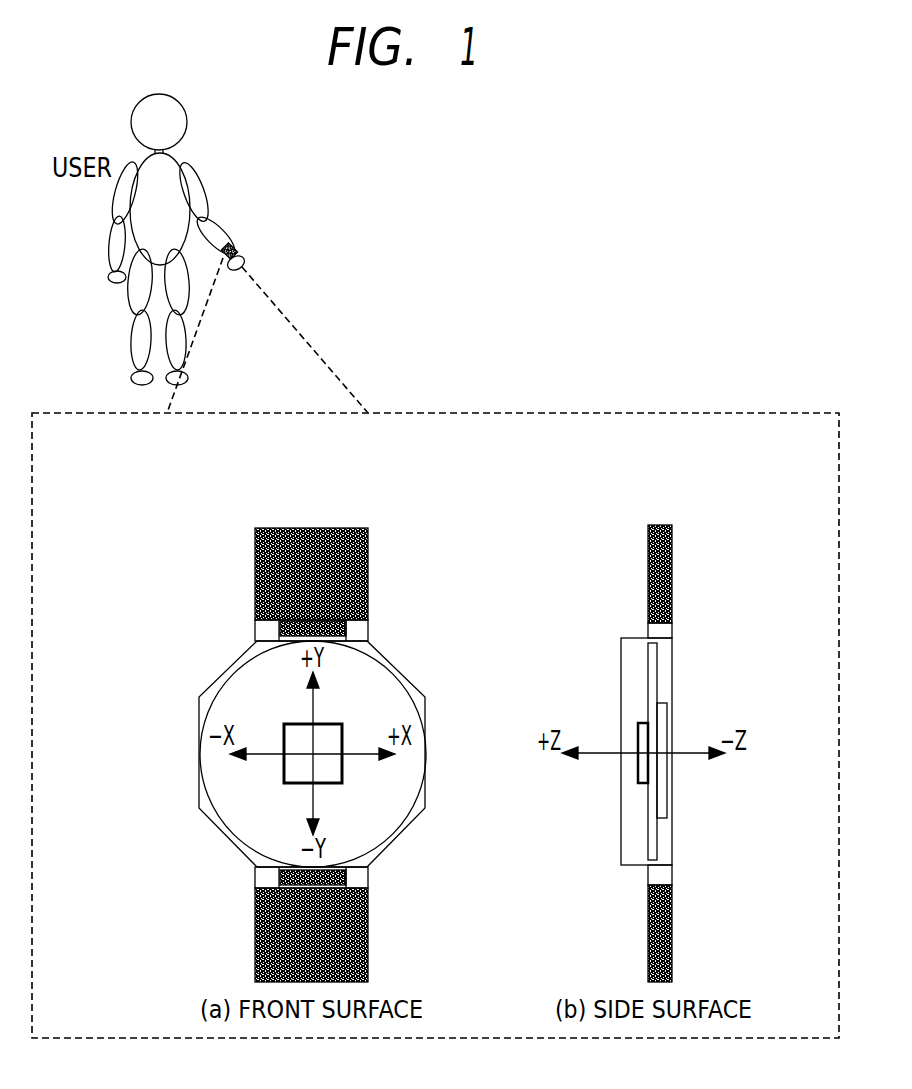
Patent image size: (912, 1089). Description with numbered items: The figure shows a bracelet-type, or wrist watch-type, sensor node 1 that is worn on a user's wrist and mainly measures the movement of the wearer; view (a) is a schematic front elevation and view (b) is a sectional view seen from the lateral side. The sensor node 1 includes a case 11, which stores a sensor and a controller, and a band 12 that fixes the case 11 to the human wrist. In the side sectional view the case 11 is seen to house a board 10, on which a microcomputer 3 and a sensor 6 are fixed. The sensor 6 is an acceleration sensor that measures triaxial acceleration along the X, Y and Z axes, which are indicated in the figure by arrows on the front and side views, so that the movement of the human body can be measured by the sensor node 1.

The sensor node 1 is at (396, 658).
The microcomputer 3 is at (665, 782).
The sensor 6 is at (642, 723).
The board 10 is at (653, 673).
The case 11 is at (393, 835).
The band 12 is at (363, 932).